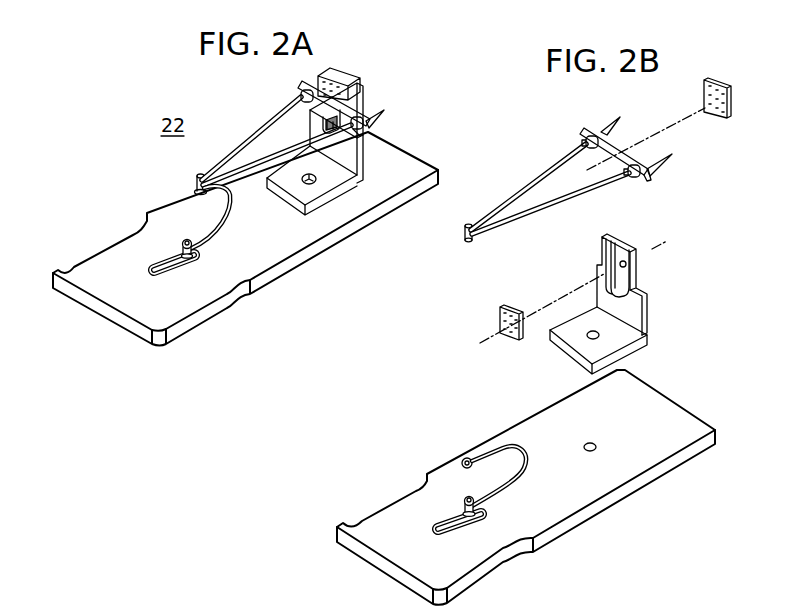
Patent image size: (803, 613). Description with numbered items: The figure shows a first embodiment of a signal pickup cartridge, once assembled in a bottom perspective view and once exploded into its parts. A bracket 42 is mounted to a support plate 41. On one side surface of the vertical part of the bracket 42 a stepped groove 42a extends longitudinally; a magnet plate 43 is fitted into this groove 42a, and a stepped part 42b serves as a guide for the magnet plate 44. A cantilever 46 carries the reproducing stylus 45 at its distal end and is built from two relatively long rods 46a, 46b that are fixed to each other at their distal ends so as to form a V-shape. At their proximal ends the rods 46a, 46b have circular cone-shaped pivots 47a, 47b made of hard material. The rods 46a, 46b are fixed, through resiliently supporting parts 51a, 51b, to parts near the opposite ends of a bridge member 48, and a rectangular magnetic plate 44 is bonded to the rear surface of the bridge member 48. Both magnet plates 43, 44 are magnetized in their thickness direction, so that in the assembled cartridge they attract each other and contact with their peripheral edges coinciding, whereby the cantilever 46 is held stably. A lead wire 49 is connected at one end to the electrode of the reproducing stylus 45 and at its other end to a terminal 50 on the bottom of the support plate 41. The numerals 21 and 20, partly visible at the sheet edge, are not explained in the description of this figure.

In FIG. 2A, the support plate 41 is at (300, 243).
In FIG. 2B, the support plate 41 is at (622, 483).
In FIG. 2A, the bracket 42 is at (332, 168).
In FIG. 2B, the bracket 42 is at (620, 296).
In FIG. 2B, the stepped groove 42a is at (630, 244).
In FIG. 2A, the stepped part 42b is at (331, 121).
In FIG. 2B, the stepped part 42b is at (606, 251).
In FIG. 2A, the magnet plate 43 is at (353, 84).
In FIG. 2B, the magnet plate 43 is at (500, 317).
In FIG. 2A, the magnetic plate 44 is at (342, 78).
In FIG. 2B, the magnetic plate 44 is at (726, 86).
In FIG. 2A, the reproducing stylus 45 is at (195, 176).
In FIG. 2B, the reproducing stylus 45 is at (464, 235).
In FIG. 2A, the cantilever 46 is at (267, 157).
In FIG. 2B, the cantilever 46 is at (550, 189).
In FIG. 2A, the rod 46a is at (261, 136).
In FIG. 2B, the rod 46a is at (542, 174).
In FIG. 2A, the rod 46b is at (258, 164).
In FIG. 2B, the rod 46b is at (578, 197).
In FIG. 2B, the pivot 47a is at (616, 120).
In FIG. 2B, the pivot 47b is at (665, 161).
In FIG. 2A, the bridge member 48 is at (338, 125).
In FIG. 2B, the bridge member 48 is at (637, 151).
In FIG. 2A, the lead wire 49 is at (223, 226).
In FIG. 2B, the lead wire 49 is at (519, 468).
In FIG. 2A, the terminal 50 is at (175, 266).
In FIG. 2B, the terminal 50 is at (448, 527).
In FIG. 2A, the resiliently supporting part 51a is at (301, 92).
In FIG. 2B, the resiliently supporting part 51a is at (586, 140).
In FIG. 2A, the resiliently supporting part 51b is at (360, 132).
In FIG. 2B, the resiliently supporting part 51b is at (634, 181).
In FIG. 2B, the cut-off numeral 21 is at (500, 607).
In FIG. 2B, the cut-off numeral 20 is at (568, 607).